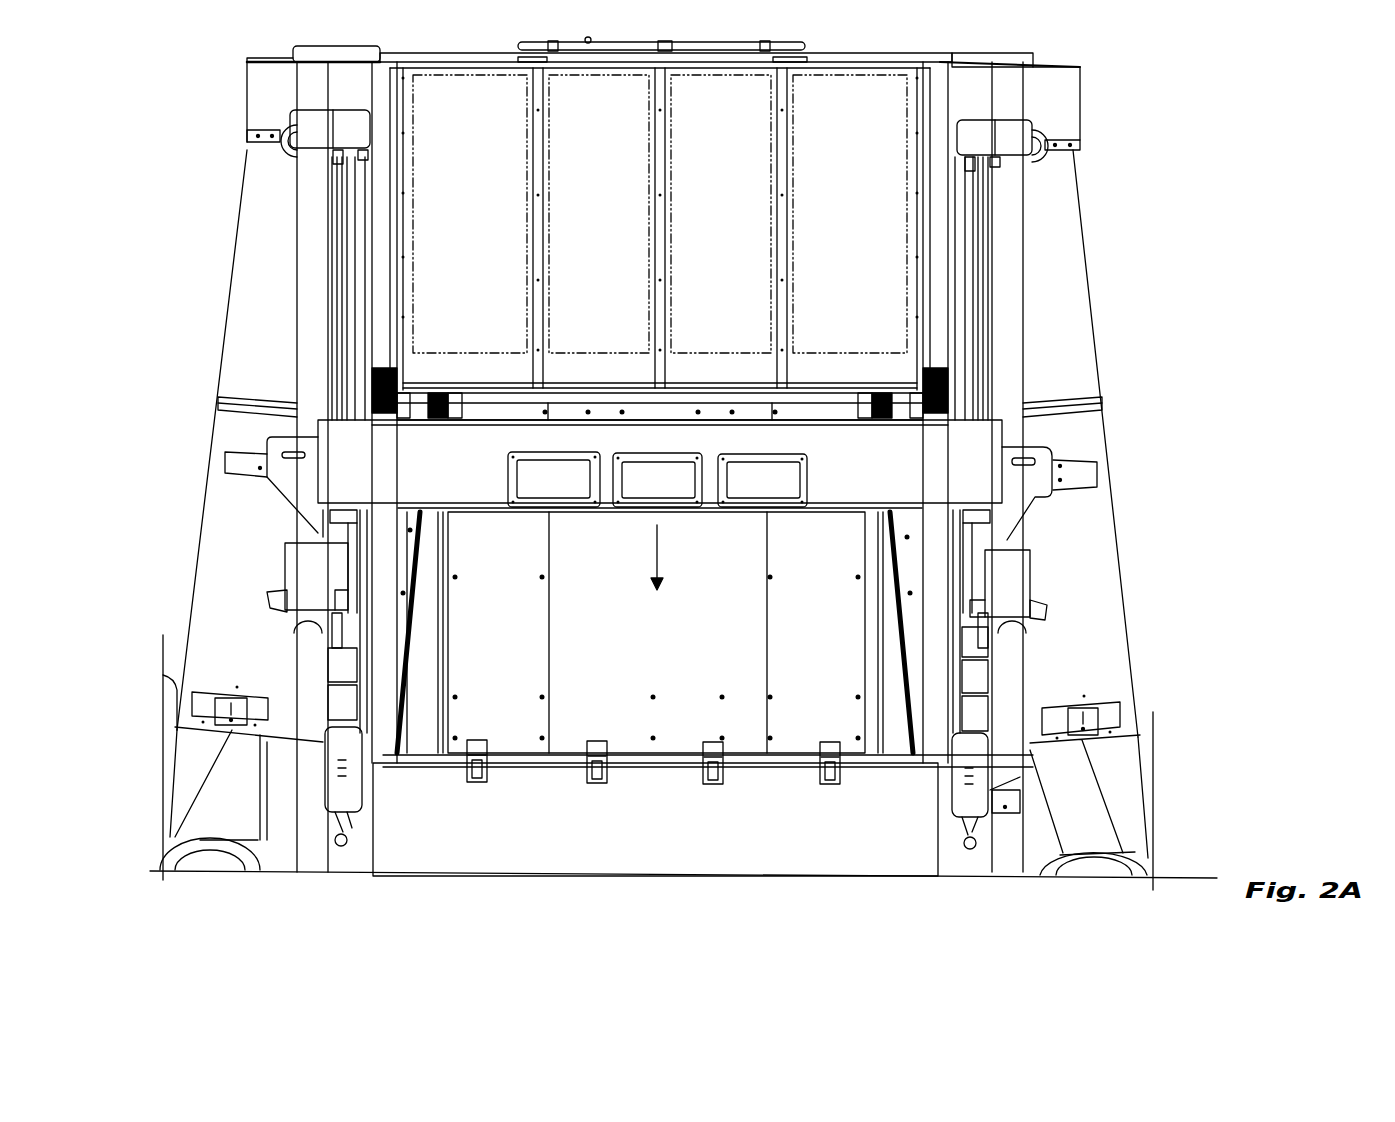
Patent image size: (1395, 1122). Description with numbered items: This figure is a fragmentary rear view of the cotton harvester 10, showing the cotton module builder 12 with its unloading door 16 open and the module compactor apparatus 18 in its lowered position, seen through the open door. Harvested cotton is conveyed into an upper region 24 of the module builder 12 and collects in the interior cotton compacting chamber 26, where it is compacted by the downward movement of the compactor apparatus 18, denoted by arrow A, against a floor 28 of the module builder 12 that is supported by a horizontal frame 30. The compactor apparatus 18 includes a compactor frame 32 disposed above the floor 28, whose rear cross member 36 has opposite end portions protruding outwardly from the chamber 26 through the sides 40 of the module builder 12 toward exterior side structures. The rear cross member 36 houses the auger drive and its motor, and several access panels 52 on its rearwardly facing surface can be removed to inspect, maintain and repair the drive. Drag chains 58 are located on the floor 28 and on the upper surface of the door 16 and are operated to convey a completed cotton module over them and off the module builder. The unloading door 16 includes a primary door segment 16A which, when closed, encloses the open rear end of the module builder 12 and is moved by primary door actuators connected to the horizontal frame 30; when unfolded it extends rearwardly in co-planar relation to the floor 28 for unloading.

The cotton harvester 10 is at (1180, 94).
The cotton module builder 12 is at (1033, 221).
The unloading door 16 is at (900, 828).
The primary door segment 16A is at (653, 856).
The module compactor apparatus 18 is at (1006, 420).
The upper region 24 is at (865, 46).
The interior cotton compacting chamber 26 is at (835, 613).
The floor 28 is at (637, 763).
The horizontal frame 30 is at (987, 775).
The compactor frame 32 is at (1060, 440).
The rear cross member 36 is at (660, 406).
The sides 40 is at (350, 483).
The access panels 52 is at (508, 468).
The drag chains 58 is at (483, 740).
The arrow A is at (658, 547).